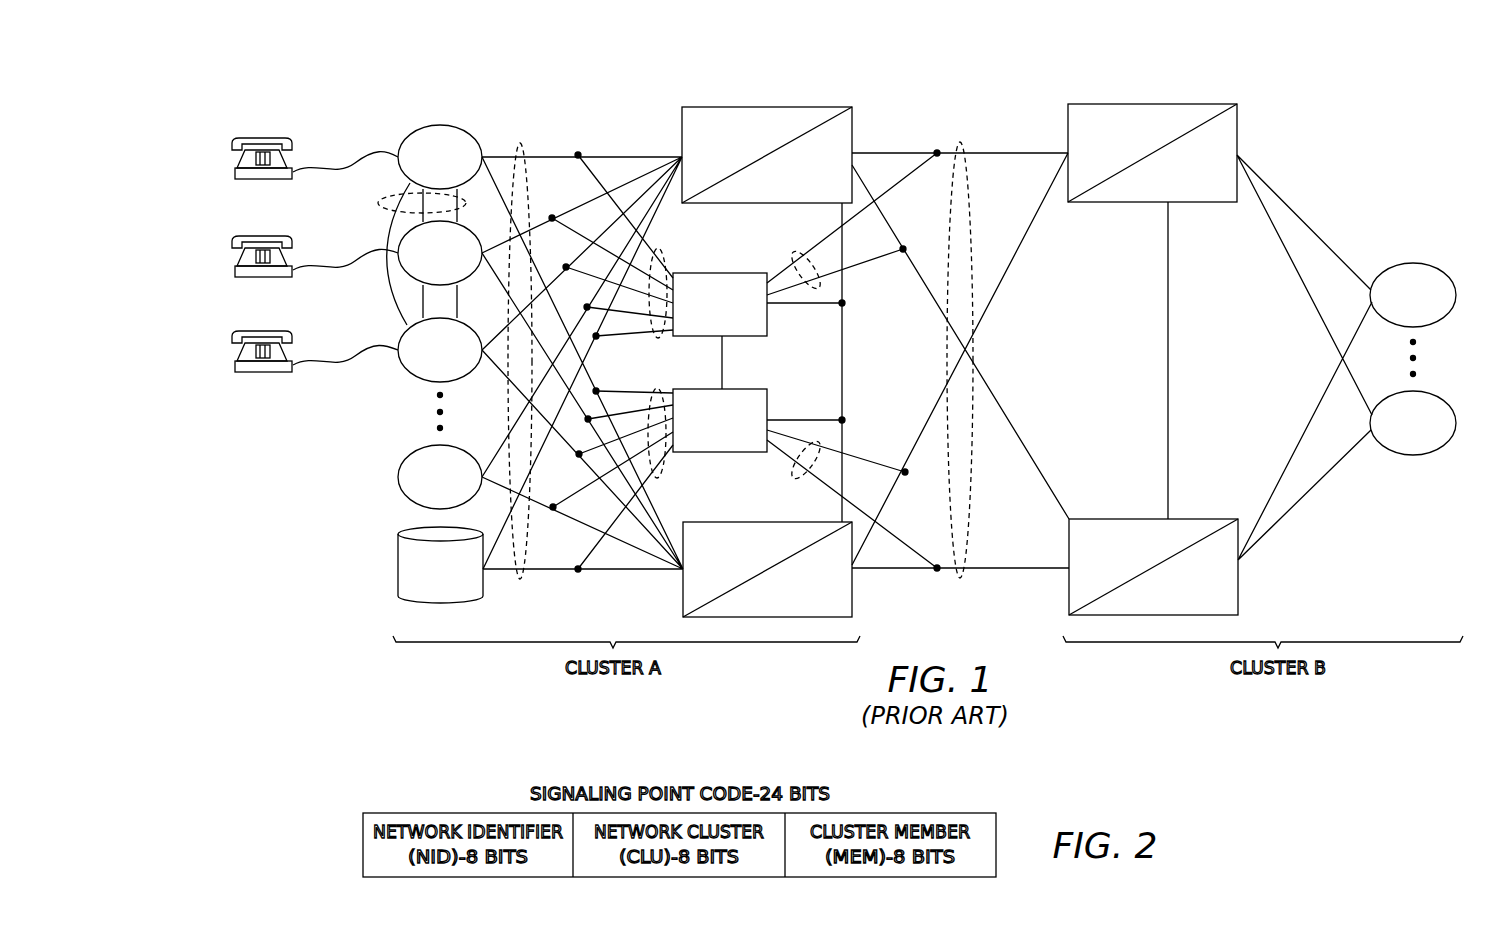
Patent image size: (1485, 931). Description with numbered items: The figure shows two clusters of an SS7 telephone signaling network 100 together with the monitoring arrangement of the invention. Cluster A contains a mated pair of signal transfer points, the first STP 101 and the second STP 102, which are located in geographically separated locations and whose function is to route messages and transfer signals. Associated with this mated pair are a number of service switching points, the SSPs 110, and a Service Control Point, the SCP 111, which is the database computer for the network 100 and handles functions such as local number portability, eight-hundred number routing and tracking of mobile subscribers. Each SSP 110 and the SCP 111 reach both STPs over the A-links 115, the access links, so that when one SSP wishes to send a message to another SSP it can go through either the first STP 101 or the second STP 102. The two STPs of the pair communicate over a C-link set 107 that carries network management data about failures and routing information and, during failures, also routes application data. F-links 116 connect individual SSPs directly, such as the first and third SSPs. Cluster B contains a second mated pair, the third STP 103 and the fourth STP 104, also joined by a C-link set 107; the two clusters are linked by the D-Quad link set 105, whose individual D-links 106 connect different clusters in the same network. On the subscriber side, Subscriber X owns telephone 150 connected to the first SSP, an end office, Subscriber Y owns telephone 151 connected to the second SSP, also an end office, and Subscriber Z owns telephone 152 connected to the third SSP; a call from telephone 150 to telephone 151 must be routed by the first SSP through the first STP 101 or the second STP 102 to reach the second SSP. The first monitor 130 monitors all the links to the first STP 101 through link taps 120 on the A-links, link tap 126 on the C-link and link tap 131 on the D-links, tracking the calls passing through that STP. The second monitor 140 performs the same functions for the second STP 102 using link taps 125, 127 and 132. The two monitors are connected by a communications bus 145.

The network 100 is at (1340, 112).
The STP 101 is at (752, 107).
The STP 102 is at (683, 595).
The STP 103 is at (1165, 104).
The STP 104 is at (1238, 592).
The D-Quad link set 105 is at (960, 142).
The D-link 106 is at (1028, 153).
The C-link set 107 is at (848, 358).
The SSP 110 is at (440, 125).
The SCP 111 is at (398, 570).
The A-links 115 is at (518, 143).
The F-links 116 is at (380, 202).
The link taps 120 is at (660, 340).
The link taps 125 is at (660, 390).
The link tap 126 is at (798, 305).
The link tap 127 is at (798, 420).
The monitor 130 is at (722, 273).
The link tap 131 is at (800, 250).
The link tap 132 is at (800, 465).
The monitor 140 is at (722, 452).
The communications bus 145 is at (722, 368).
The telephone 150 is at (258, 137).
The telephone 151 is at (245, 235).
The telephone 152 is at (262, 373).